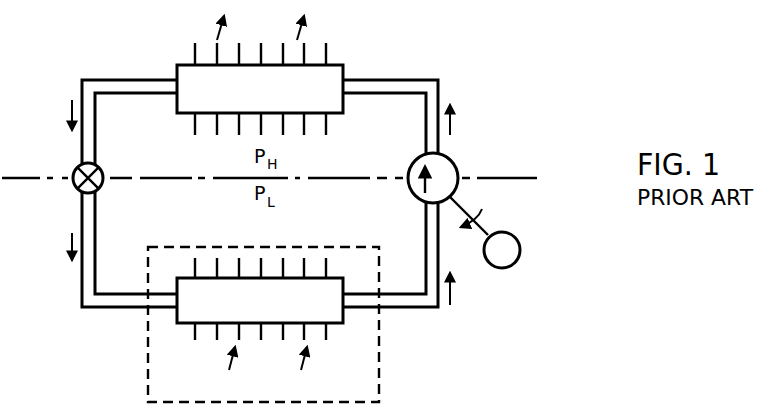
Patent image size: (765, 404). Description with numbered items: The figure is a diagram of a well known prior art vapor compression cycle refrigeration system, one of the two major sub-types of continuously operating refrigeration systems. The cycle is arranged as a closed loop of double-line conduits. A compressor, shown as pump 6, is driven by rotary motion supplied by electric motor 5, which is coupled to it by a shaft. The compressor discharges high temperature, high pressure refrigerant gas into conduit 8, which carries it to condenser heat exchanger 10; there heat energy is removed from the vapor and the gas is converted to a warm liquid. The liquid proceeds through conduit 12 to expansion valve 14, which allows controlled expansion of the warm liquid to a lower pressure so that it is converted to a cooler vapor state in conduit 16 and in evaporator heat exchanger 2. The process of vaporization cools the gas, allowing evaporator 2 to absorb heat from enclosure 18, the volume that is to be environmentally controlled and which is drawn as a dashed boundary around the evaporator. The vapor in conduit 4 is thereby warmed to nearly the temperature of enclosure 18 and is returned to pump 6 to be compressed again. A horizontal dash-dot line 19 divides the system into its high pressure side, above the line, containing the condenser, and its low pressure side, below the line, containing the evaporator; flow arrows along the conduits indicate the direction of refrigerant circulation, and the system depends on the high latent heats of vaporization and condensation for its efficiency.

The evaporator heat exchanger 2 is at (343, 279).
The conduit 4 is at (419, 308).
The electric motor 5 is at (515, 237).
The compressor 6 is at (413, 162).
The conduit 8 is at (418, 80).
The condenser heat exchanger 10 is at (343, 70).
The conduit 12 is at (108, 78).
The expansion valve 14 is at (99, 172).
The conduit 16 is at (108, 307).
The enclosure 18 is at (380, 395).
The line 19 is at (513, 177).